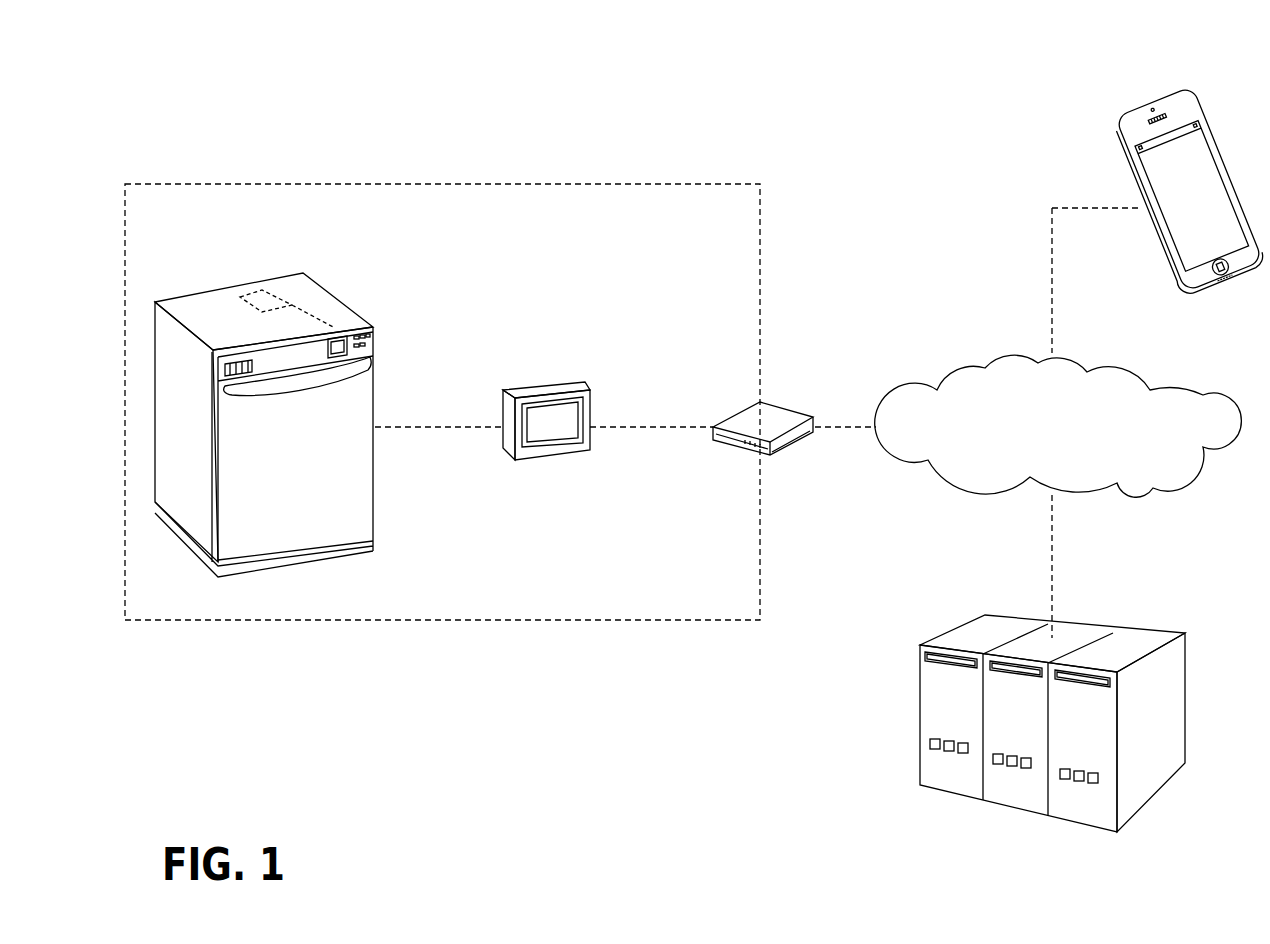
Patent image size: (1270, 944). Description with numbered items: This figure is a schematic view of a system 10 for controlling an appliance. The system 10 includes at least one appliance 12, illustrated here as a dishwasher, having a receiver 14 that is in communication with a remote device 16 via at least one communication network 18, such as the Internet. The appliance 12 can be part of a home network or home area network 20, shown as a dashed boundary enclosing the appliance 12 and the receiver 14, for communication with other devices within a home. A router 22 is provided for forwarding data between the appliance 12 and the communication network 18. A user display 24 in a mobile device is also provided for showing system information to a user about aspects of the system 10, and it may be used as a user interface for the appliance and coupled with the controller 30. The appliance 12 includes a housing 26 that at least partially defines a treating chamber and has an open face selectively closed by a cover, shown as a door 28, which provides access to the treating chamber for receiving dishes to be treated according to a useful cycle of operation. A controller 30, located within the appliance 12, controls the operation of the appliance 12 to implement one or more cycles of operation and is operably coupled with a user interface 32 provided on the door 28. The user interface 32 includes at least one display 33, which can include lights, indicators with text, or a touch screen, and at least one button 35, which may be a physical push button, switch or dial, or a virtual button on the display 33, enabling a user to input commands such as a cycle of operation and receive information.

The system 10 is at (531, 77).
The appliance 12 is at (262, 394).
The receiver 14 is at (592, 382).
The remote device 16 is at (1190, 680).
The communication network 18 is at (1036, 436).
The home area network 20 is at (601, 183).
The router 22 is at (810, 410).
The user display 24 is at (1140, 97).
The housing 26 is at (177, 425).
The door 28 is at (328, 502).
The controller 30 is at (270, 290).
The user interface 32 is at (332, 325).
The display 33 is at (340, 357).
The button 35 is at (368, 345).